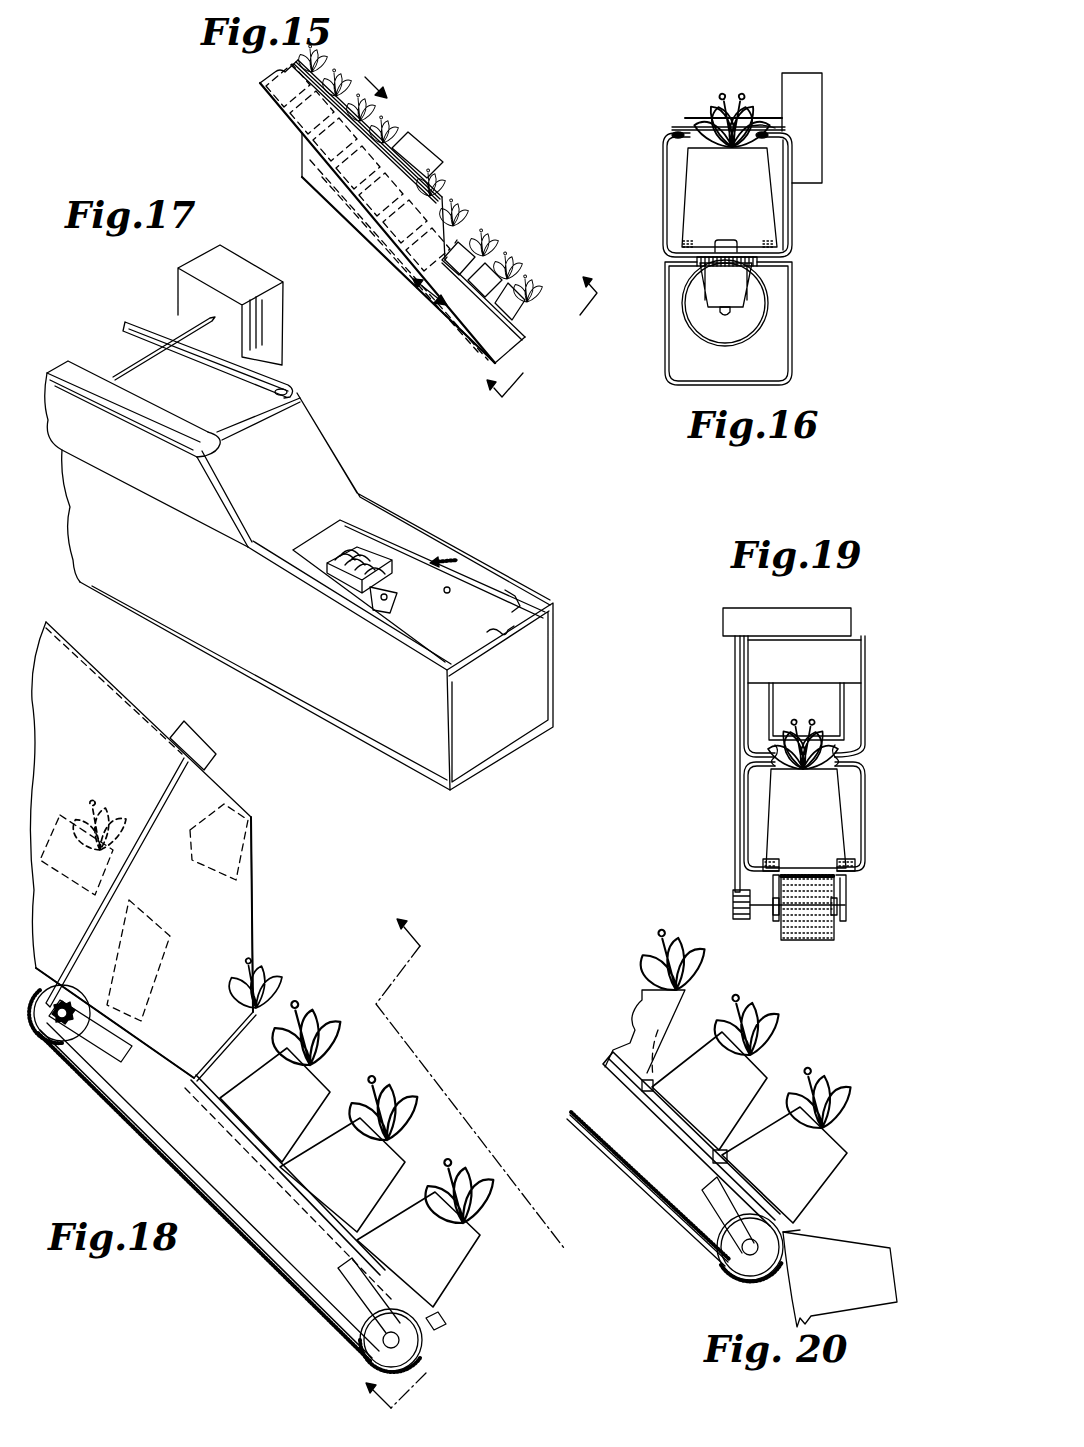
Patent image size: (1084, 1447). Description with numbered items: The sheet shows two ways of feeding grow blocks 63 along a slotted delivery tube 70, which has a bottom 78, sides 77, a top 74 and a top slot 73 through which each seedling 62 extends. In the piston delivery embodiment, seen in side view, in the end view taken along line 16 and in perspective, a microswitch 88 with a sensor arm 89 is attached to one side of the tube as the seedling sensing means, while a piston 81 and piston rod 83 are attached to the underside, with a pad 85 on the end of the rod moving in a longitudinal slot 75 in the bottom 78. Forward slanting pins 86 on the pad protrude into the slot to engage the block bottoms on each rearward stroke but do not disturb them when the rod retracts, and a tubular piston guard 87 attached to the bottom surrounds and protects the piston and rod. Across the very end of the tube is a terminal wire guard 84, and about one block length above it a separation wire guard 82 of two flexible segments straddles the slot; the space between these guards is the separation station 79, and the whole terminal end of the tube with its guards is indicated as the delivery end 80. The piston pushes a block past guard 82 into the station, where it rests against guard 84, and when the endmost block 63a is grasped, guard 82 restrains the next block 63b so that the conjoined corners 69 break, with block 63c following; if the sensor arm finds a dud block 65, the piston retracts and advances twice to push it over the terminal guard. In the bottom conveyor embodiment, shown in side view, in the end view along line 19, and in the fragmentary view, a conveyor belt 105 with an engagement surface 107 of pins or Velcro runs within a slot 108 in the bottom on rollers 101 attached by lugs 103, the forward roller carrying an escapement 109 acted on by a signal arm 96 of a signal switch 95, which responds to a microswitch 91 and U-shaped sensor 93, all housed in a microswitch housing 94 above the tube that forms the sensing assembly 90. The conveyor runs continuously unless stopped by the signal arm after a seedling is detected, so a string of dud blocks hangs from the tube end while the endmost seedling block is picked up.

In FIG. 15, the section line 16— 16 is at (559, 348).
In FIG. 18, the section line 19— 19 is at (465, 1173).
In FIG. 15, the seedling 62 is at (326, 62).
In FIG. 16, the seedling 62 is at (735, 100).
In FIG. 18, the seedling 62 is at (394, 1095).
In FIG. 19, the seedling 62 is at (814, 730).
In FIG. 20, the seedling 62 is at (770, 1018).
In FIG. 15, the grow block 63 is at (462, 232).
In FIG. 16, the grow block 63 is at (738, 195).
In FIG. 19, the grow block 63 is at (823, 835).
In FIG. 15, the endmost block 63a is at (533, 314).
In FIG. 18, the endmost block 63a is at (445, 1259).
In FIG. 20, the endmost block 63a is at (809, 1165).
In FIG. 15, the next block 63b is at (503, 279).
In FIG. 18, the next block 63b is at (365, 1187).
In FIG. 20, the next block 63b is at (734, 1085).
In FIG. 15, the grow block 63c is at (478, 240).
In FIG. 18, the grow block 63c is at (294, 1109).
In FIG. 18, the dud block 65 is at (168, 918).
In FIG. 20, the dud block 65 is at (872, 1242).
In FIG. 18, the conjoined corners 69 is at (440, 1328).
In FIG. 19, the conjoined corners 69 is at (766, 860).
In FIG. 20, the conjoined corners 69 is at (658, 1060).
In FIG. 16, the slotted delivery tube 70 is at (665, 178).
In FIG. 17, the slotted delivery tube 70 is at (322, 431).
In FIG. 16, the top slot 73 is at (766, 129).
In FIG. 17, the top slot 73 is at (262, 385).
In FIG. 19, the top slot 73 is at (826, 772).
In FIG. 17, the top 74 is at (58, 366).
In FIG. 19, the top 74 is at (848, 752).
In FIG. 17, the longitudinal slot 75 is at (480, 580).
In FIG. 17, the side 77 is at (301, 432).
In FIG. 19, the side 77 is at (866, 805).
In FIG. 17, the bottom 78 is at (285, 505).
In FIG. 17, the separation station 79 is at (512, 594).
In FIG. 18, the separation station 79 is at (382, 1280).
In FIG. 17, the channel tray 80 is at (556, 606).
In FIG. 15, the piston 81 is at (368, 238).
In FIG. 16, the piston 81 is at (752, 311).
In FIG. 17, the separation wire guard 82 is at (456, 554).
In FIG. 15, the piston rod 83 is at (405, 268).
In FIG. 16, the piston rod 83 is at (726, 314).
In FIG. 15, the terminal wire guard 84 is at (522, 342).
In FIG. 16, the terminal wire guard 84 is at (738, 238).
In FIG. 17, the terminal wire guard 84 is at (505, 633).
In FIG. 15, the pad 85 is at (470, 328).
In FIG. 16, the pad 85 is at (738, 290).
In FIG. 17, the pad 85 is at (392, 588).
In FIG. 16, the forward slanting pins 86 is at (700, 262).
In FIG. 17, the forward slanting pins 86 is at (362, 552).
In FIG. 15, the tubular piston guard 87 is at (478, 358).
In FIG. 16, the tubular piston guard 87 is at (792, 367).
In FIG. 17, the tubular piston guard 87 is at (490, 760).
In FIG. 15, the microswitch 88 is at (413, 133).
In FIG. 16, the microswitch 88 is at (822, 111).
In FIG. 17, the microswitch 88 is at (225, 255).
In FIG. 15, the sensor arm 89 is at (412, 160).
In FIG. 16, the sensor arm 89 is at (764, 118).
In FIG. 17, the sensor arm 89 is at (123, 360).
In FIG. 18, the carriage assembly 90 is at (244, 765).
In FIG. 19, the carriage assembly 90 is at (864, 627).
In FIG. 18, the microswitch 91 is at (256, 842).
In FIG. 19, the microswitch 91 is at (850, 662).
In FIG. 18, the U-shaped sensor 93 is at (196, 880).
In FIG. 19, the U-shaped sensor 93 is at (846, 700).
In FIG. 18, the microswitch housing 94 is at (113, 742).
In FIG. 19, the microswitch housing 94 is at (866, 720).
In FIG. 18, the signal switch 95 is at (200, 748).
In FIG. 19, the signal switch 95 is at (850, 606).
In FIG. 18, the signal arm 96 is at (172, 778).
In FIG. 19, the signal arm 96 is at (735, 864).
In FIG. 18, the roller 101 is at (68, 1045).
In FIG. 20, the roller 101 is at (722, 1260).
In FIG. 18, the lug 103 is at (108, 1060).
In FIG. 19, the lug 103 is at (846, 892).
In FIG. 20, the lug 103 is at (710, 1195).
In FIG. 18, the conveyor belt 105 is at (185, 1168).
In FIG. 20, the conveyor belt 105 is at (640, 1110).
In FIG. 18, the engagement surface 107 is at (140, 1135).
In FIG. 19, the engagement surface 107 is at (832, 935).
In FIG. 20, the engagement surface 107 is at (758, 1284).
In FIG. 19, the slot 108 is at (856, 864).
In FIG. 18, the escapement 109 is at (55, 1025).
In FIG. 19, the escapement 109 is at (733, 897).